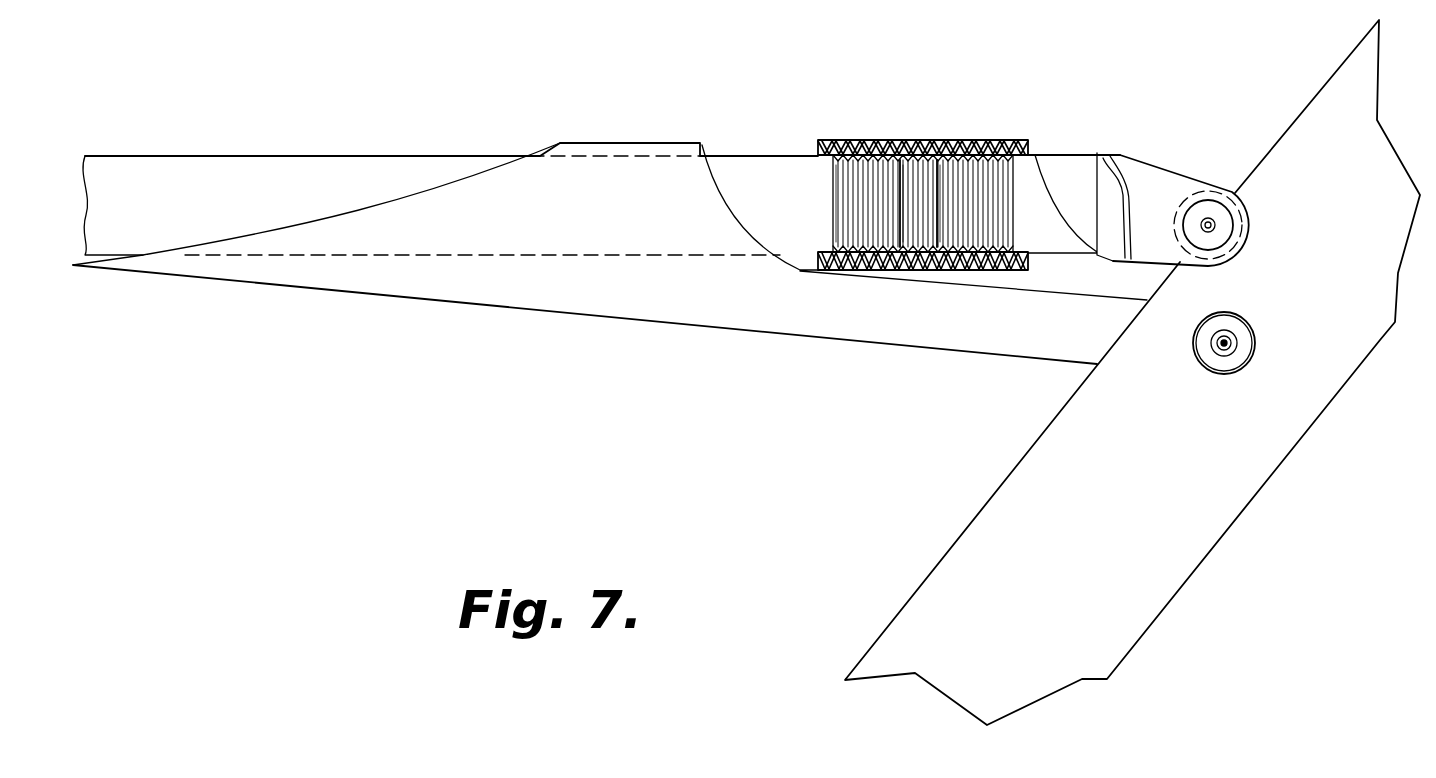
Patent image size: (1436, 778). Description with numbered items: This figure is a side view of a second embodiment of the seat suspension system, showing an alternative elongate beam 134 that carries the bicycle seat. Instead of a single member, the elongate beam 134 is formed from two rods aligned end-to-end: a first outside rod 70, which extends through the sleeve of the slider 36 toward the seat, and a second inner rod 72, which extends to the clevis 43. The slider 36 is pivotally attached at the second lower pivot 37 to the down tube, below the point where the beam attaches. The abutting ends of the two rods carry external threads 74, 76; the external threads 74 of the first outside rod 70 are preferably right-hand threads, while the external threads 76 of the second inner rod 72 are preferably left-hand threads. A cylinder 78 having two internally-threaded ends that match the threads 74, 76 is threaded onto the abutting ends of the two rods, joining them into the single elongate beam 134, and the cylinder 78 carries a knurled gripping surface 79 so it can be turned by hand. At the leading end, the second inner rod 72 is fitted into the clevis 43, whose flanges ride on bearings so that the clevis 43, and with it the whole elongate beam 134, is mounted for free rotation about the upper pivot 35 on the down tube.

The first outside rod 70 is at (155, 172).
The slider 36 is at (777, 310).
The elongate beam 134 is at (762, 142).
The second inner rod 72 is at (1053, 245).
The knurled gripping surface 79 is at (848, 137).
The external threads 74 is at (877, 185).
The cylinder 78 is at (943, 137).
The external threads 76 is at (980, 188).
The clevis 43 is at (1133, 170).
The upper pivot 35 is at (1226, 176).
The lower pivot 37 is at (1236, 378).